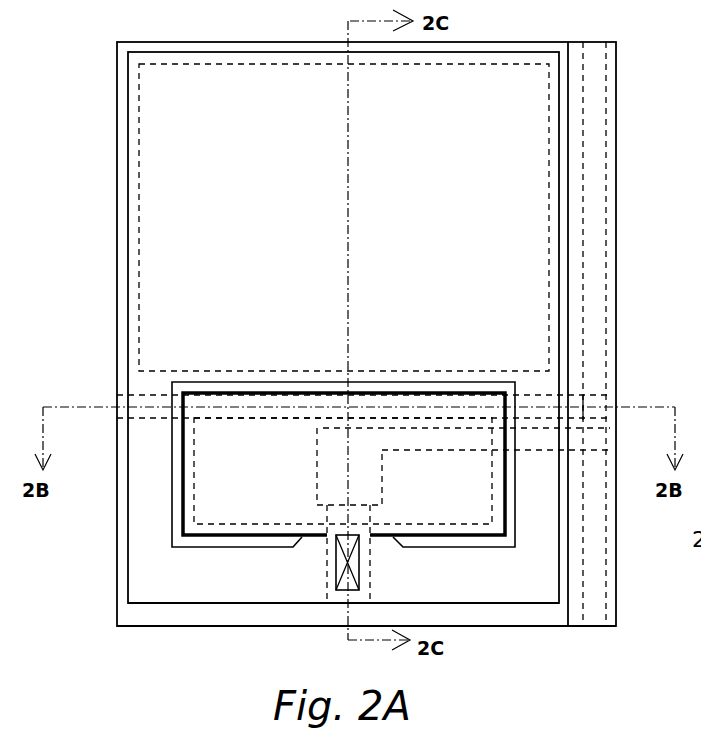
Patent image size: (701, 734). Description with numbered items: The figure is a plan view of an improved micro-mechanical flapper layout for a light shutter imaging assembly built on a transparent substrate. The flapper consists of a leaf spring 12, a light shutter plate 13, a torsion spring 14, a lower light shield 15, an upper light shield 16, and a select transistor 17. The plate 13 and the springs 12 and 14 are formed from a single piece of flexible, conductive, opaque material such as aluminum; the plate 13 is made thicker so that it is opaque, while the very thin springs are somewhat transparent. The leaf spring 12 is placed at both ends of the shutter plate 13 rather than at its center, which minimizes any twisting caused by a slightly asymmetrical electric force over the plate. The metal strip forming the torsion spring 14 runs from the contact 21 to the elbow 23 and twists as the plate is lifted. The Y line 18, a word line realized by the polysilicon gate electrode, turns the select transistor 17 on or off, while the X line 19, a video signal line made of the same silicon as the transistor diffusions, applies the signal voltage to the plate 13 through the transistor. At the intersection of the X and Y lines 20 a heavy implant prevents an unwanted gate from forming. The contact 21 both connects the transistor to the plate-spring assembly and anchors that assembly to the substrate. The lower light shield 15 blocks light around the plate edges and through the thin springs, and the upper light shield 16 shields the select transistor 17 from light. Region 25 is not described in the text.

The leaf spring 12 is at (152, 512).
The light shutter plate 13 is at (128, 94).
The torsion spring 14 is at (241, 572).
The lower light shield 15 is at (617, 252).
The upper light shield 16 is at (437, 537).
The select transistor 17 is at (315, 462).
The Y line 18 is at (605, 158).
The X line 19 is at (616, 408).
The intersection of the X and Y lines 20 is at (578, 407).
The contact 21 is at (336, 565).
The elbow 23 is at (127, 600).
The pixel region 25 is at (139, 172).